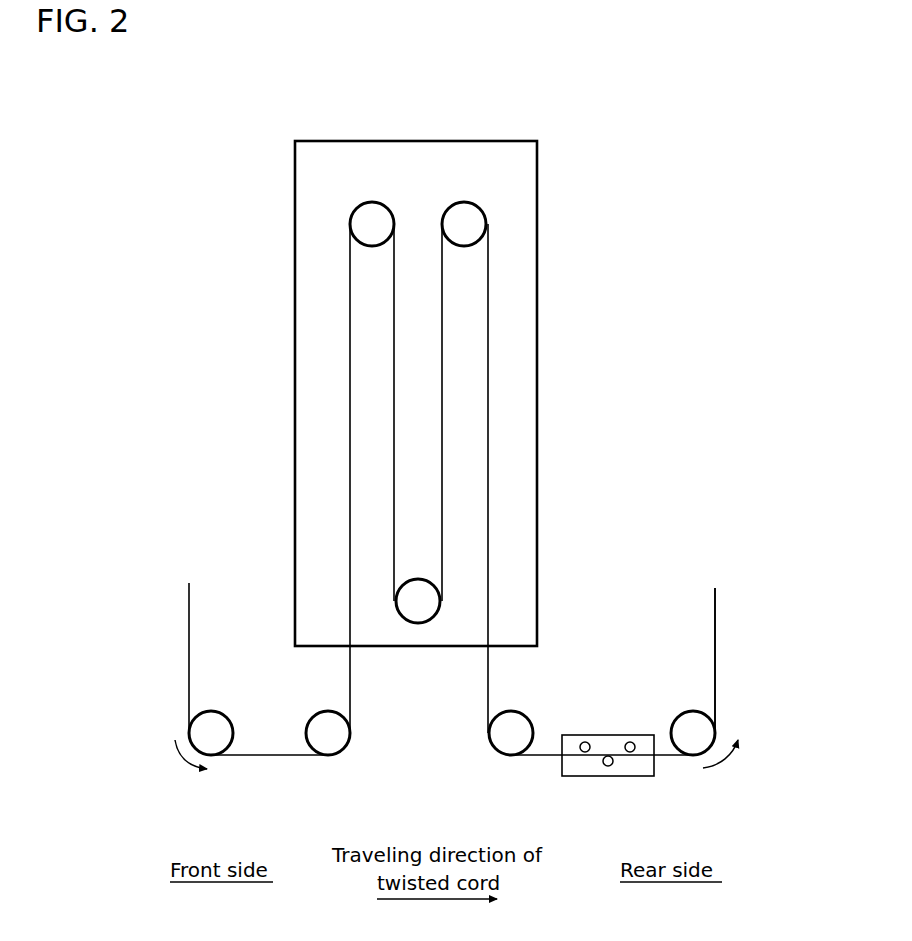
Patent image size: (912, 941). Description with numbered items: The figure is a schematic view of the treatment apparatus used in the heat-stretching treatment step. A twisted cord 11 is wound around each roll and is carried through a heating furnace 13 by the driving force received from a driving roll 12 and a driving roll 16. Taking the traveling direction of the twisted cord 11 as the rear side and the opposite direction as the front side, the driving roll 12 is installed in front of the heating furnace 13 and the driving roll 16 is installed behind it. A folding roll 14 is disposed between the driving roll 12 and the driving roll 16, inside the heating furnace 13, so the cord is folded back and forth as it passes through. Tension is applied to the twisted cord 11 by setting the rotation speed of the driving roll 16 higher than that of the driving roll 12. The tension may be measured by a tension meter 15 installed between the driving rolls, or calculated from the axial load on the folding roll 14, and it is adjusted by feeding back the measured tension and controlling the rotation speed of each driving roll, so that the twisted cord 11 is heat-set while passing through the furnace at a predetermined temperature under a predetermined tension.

The twisted cord 11 is at (715, 602).
The driving roll 12 is at (217, 709).
The heating furnace 13 is at (537, 239).
The folding roll 14 is at (348, 220).
The tension meter 15 is at (562, 770).
The driving roll 16 is at (690, 708).